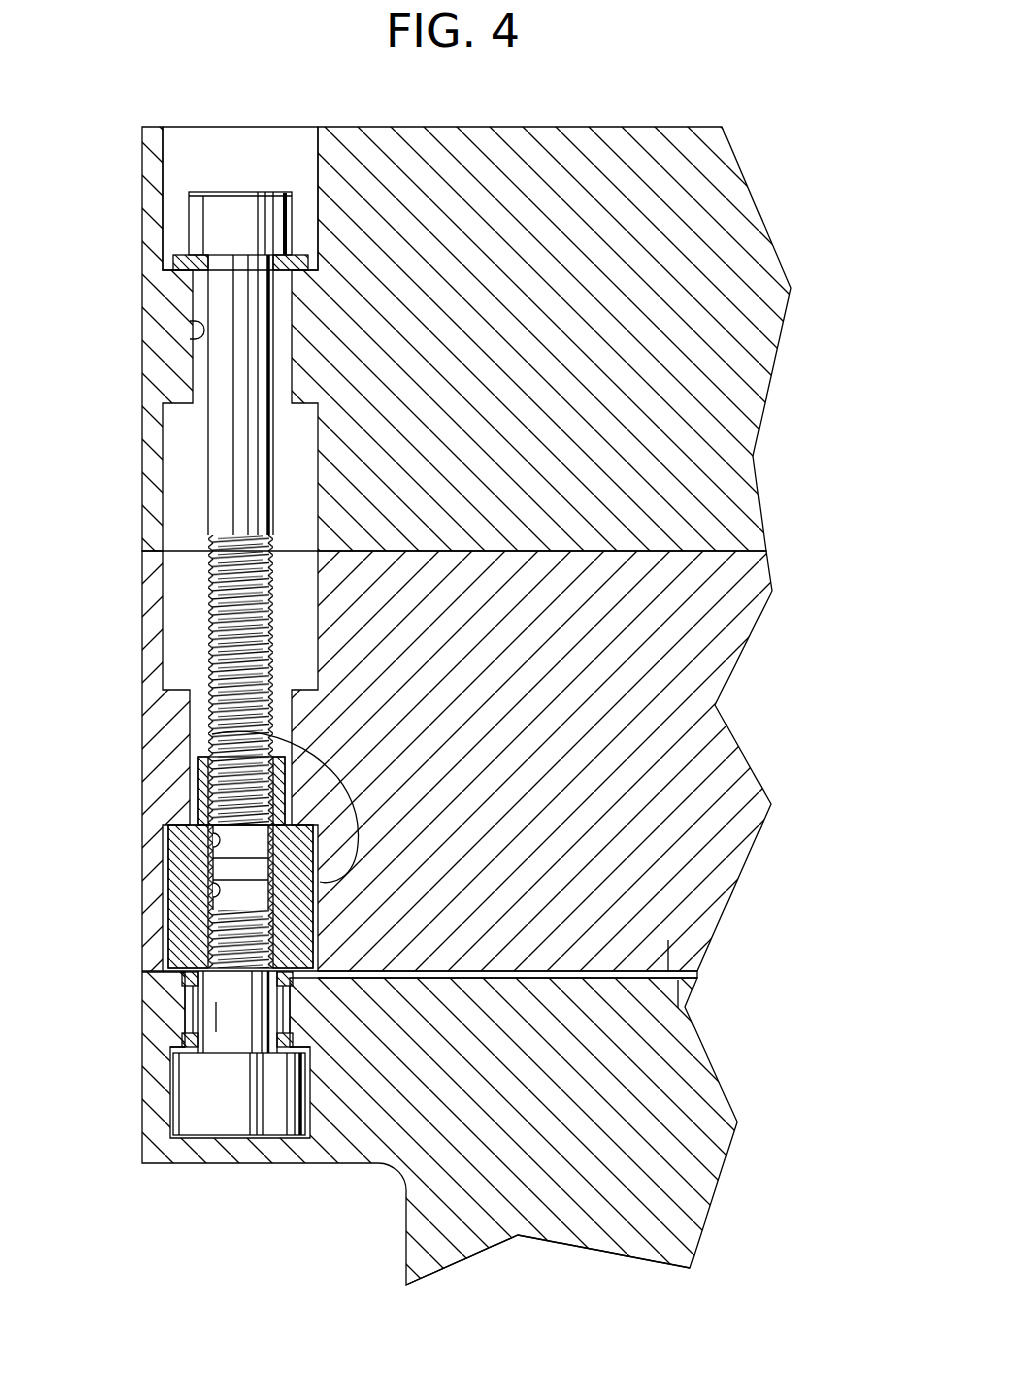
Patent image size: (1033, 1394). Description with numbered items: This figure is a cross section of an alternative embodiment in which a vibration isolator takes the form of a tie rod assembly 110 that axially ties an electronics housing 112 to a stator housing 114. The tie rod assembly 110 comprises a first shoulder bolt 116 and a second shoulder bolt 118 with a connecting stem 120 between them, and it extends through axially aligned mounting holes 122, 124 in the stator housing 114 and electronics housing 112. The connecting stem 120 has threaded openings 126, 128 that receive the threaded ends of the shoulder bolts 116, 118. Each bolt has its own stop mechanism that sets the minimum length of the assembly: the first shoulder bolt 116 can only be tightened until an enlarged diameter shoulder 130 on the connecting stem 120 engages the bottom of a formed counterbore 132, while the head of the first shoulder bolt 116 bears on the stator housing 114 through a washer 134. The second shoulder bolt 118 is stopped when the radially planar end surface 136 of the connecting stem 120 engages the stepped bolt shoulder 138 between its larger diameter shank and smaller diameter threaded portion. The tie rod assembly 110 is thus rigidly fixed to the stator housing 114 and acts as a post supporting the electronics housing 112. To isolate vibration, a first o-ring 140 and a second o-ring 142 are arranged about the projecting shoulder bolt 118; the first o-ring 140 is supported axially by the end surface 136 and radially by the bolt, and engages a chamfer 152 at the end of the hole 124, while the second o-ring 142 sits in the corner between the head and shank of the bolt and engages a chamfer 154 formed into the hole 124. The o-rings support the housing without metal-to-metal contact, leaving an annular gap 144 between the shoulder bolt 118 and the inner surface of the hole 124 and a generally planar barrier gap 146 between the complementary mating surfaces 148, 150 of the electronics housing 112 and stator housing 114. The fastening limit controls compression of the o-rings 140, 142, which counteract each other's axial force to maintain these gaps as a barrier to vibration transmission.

The tie rod assembly 110 is at (233, 178).
The electronics housing 112 is at (700, 1068).
The stator housing 114 is at (705, 493).
The first shoulder bolt 116 is at (237, 218).
The second shoulder bolt 118 is at (208, 1118).
The connecting stem 120 is at (200, 782).
The mounting hole 122 is at (195, 339).
The mounting hole 124 is at (200, 1020).
The threaded opening 126 is at (208, 840).
The threaded opening 128 is at (208, 890).
The enlarged diameter shoulder 130 is at (185, 932).
The counterbore 132 is at (212, 732).
The washer 134 is at (297, 257).
The radially planar end surface 136 is at (168, 985).
The stepped bolt shoulder 138 is at (207, 972).
The first o-ring 140 is at (190, 990).
The second o-ring 142 is at (190, 1035).
The annular gap 144 is at (300, 993).
The planar barrier gap 146 is at (700, 977).
The mating surface 148 is at (668, 942).
The mating surface 150 is at (678, 1006).
The chamfer 152 is at (295, 1040).
The chamfer 154 is at (521, 1234).